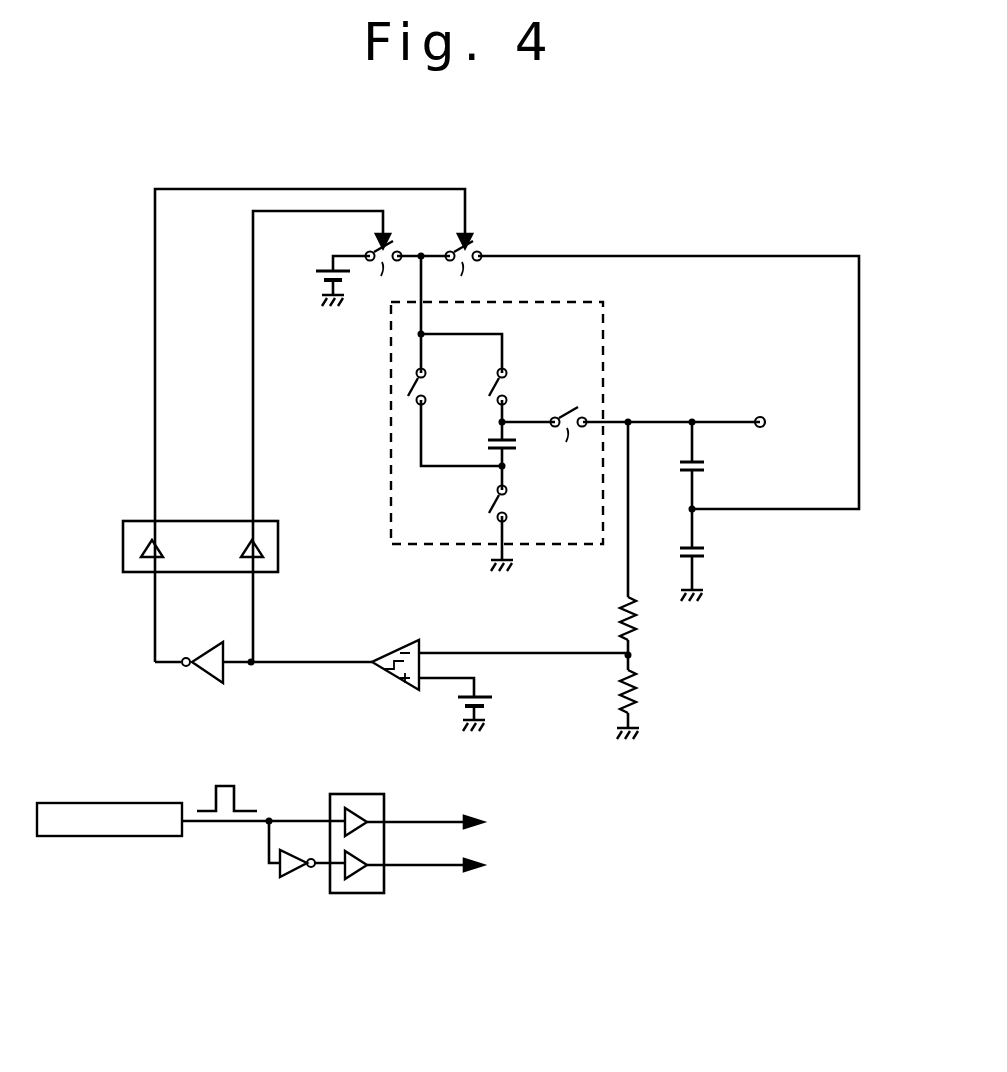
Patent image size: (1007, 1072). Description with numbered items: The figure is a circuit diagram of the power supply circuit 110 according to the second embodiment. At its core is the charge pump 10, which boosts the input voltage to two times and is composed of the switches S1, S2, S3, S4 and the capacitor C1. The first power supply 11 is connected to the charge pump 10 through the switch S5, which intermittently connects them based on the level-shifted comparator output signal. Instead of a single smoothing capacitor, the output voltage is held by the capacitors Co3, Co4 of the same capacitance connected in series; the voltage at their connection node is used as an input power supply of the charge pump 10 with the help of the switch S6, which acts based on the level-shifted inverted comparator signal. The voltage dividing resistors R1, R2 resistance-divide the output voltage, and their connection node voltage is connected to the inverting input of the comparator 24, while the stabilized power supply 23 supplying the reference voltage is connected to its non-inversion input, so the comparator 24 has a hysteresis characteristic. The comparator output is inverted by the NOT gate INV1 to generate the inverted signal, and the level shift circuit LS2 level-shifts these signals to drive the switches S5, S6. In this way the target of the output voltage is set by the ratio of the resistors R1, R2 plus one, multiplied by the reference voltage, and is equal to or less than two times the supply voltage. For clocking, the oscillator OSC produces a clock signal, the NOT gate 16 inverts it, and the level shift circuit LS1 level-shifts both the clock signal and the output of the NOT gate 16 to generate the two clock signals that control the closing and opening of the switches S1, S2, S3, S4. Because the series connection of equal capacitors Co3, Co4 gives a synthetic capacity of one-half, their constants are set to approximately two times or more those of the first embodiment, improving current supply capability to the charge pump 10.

The power supply circuit 110 is at (760, 913).
The charge pump 10 is at (603, 331).
The first power supply 11 is at (320, 267).
The NOT gate 16 is at (281, 879).
The stabilized power supply 23 is at (490, 700).
The comparator 24 is at (395, 650).
The switch S1 is at (508, 380).
The switch S2 is at (508, 497).
The switch S3 is at (427, 380).
The switch S4 is at (569, 438).
The switch S5 is at (384, 272).
The switch S6 is at (464, 272).
The capacitor C1 is at (492, 439).
The capacitor Co3 is at (700, 473).
The capacitor Co4 is at (700, 559).
The voltage dividing resistor R1 is at (636, 615).
The voltage dividing resistor R2 is at (636, 689).
The level shift circuit LS1 is at (358, 794).
The level shift circuit LS2 is at (200, 521).
The NOT gate INV1 is at (210, 642).
The oscillator OSC is at (108, 803).